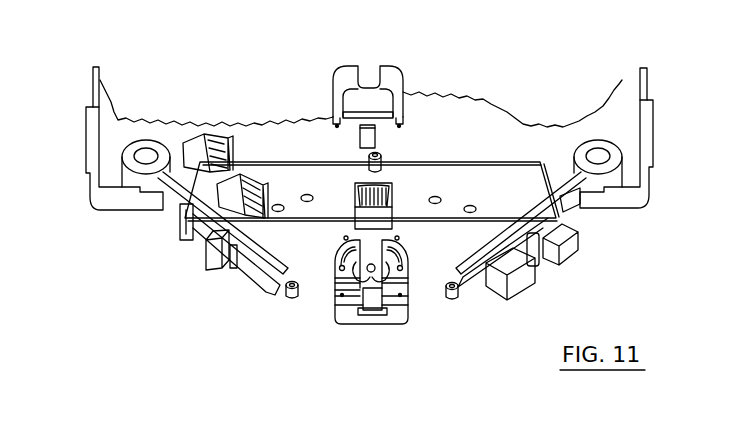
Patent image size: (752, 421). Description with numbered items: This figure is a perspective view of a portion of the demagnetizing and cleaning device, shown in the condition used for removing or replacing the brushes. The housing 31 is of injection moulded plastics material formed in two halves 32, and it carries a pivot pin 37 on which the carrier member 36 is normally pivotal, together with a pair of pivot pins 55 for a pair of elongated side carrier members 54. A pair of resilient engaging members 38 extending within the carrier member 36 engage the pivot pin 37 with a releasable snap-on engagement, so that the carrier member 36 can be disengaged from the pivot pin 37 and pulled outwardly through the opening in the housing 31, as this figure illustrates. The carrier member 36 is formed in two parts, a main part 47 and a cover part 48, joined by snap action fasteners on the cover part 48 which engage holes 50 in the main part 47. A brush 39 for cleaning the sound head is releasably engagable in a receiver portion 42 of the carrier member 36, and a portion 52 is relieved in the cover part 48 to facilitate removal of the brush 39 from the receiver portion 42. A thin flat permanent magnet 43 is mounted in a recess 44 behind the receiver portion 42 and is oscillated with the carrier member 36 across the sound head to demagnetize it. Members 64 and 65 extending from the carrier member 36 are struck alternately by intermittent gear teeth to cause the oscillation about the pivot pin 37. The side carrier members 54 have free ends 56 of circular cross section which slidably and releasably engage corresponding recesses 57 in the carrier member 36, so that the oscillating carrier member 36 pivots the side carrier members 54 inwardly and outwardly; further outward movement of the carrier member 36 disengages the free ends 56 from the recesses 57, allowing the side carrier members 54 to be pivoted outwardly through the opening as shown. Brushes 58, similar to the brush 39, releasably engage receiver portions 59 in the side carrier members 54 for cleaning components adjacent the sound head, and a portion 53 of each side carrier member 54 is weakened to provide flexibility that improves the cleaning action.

The housing 31 is at (78, 76).
The halves 32 is at (113, 113).
The carrier member 36 is at (352, 310).
The pivot pin 37 is at (378, 160).
The resilient engaging members 38 is at (345, 262).
The brush 39 is at (365, 212).
The receiver portion 42 is at (377, 308).
The permanent magnet 43 is at (360, 132).
The recess 44 is at (377, 315).
The main part 47 is at (402, 308).
The cover part 48 is at (382, 68).
The holes 50 is at (342, 288).
The relieved portion 52 is at (382, 126).
The weakened portion 53 is at (167, 193).
The side carrier members 54 is at (205, 267).
The pivot pins 55 is at (143, 152).
The free ends 56 is at (292, 298).
The recesses 57 is at (342, 285).
The brushes 58 is at (188, 150).
The receiver portions 59 is at (195, 245).
The member 64 is at (393, 237).
The member 65 is at (348, 240).